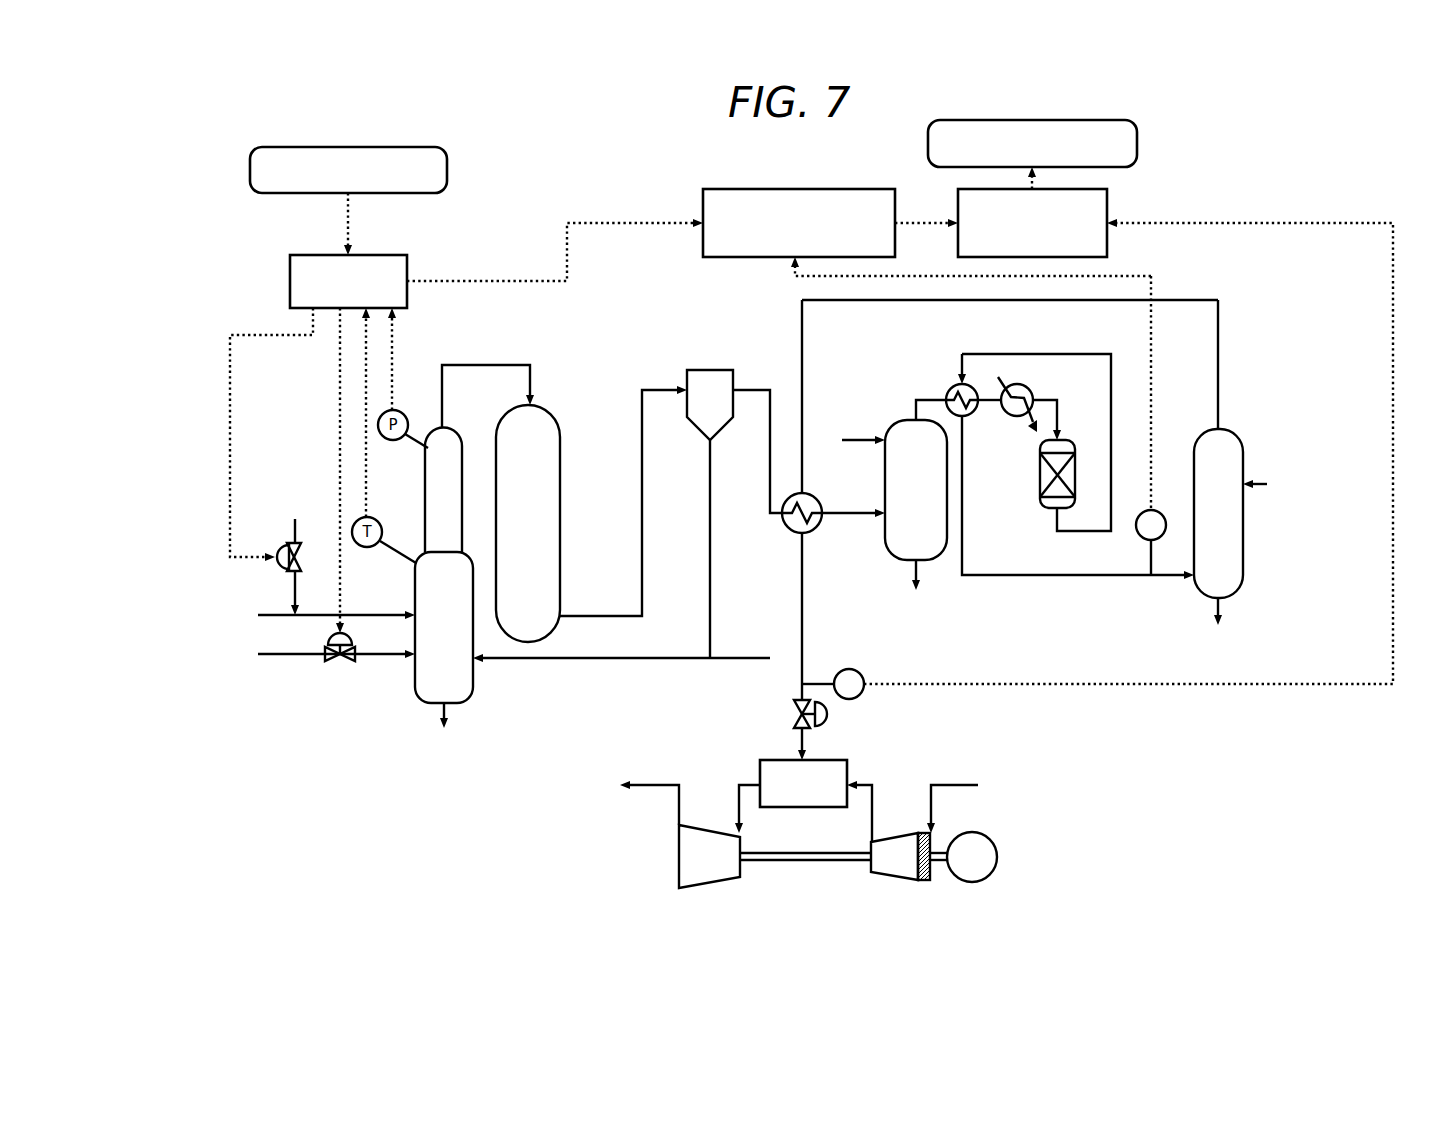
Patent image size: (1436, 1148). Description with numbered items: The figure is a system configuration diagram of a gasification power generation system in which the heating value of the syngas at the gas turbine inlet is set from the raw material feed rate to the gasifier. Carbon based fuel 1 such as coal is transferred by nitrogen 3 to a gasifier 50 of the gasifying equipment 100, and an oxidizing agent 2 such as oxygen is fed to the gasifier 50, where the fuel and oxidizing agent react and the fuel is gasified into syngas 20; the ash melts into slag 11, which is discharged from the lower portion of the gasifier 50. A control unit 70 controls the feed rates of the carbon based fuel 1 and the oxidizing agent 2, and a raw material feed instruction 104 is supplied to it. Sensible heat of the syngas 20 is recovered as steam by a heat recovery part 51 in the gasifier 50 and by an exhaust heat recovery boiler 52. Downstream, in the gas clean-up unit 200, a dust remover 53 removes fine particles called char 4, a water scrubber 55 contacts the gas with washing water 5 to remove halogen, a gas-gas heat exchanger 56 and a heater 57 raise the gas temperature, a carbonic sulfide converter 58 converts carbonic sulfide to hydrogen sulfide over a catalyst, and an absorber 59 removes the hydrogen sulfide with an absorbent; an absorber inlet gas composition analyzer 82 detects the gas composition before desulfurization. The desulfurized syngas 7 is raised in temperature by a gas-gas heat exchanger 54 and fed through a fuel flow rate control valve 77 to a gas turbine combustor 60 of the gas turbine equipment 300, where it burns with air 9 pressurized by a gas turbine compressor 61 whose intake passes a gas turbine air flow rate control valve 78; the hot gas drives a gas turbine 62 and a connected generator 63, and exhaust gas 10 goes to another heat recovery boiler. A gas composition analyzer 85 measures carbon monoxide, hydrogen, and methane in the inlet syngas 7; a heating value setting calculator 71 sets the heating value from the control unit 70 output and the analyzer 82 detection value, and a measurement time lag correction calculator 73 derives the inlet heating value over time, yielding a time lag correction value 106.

The carbon based fuel 1 is at (296, 458).
The oxidizing agent 2 is at (226, 653).
The nitrogen 3 is at (226, 613).
The char 4 is at (713, 553).
The washing water 5 is at (864, 438).
The syngas 7 is at (805, 609).
The air 9 is at (1006, 778).
The exhaust gas 10 is at (656, 783).
The slag 11 is at (427, 757).
The syngas 20 is at (443, 396).
The gasifier 50 is at (444, 627).
The heat recovery part 51 is at (443, 490).
The exhaust heat recovery boiler 52 is at (591, 514).
The dust remover 53 is at (727, 421).
The gas-gas heat exchanger 54 is at (815, 535).
The water scrubber 55 is at (884, 495).
The gas-gas heat exchanger 56 is at (954, 389).
The heater 57 is at (1032, 388).
The carbonic sulfide converter 58 is at (1092, 433).
The absorber 59 is at (1285, 462).
The gas turbine combustor 60 is at (820, 760).
The gas turbine compressor 61 is at (894, 856).
The gas turbine 62 is at (718, 888).
The generator 63 is at (975, 882).
The control unit 70 is at (377, 251).
The heating value setting calculator 71 is at (846, 189).
The measurement time lag correction calculator 73 is at (1108, 201).
The fuel flow rate control valve 77 is at (793, 720).
The gas turbine air flow rate control valve 78 is at (925, 884).
The absorber inlet gas composition analyzer 82 is at (1140, 543).
The gas composition analyzer 85 is at (866, 676).
The gasifying equipment 100 is at (474, 327).
The raw material feed instruction 104 is at (250, 177).
The time lag correction value 106 is at (1138, 141).
The gas clean-up unit 200 is at (860, 340).
The gas turbine equipment 300 is at (712, 753).